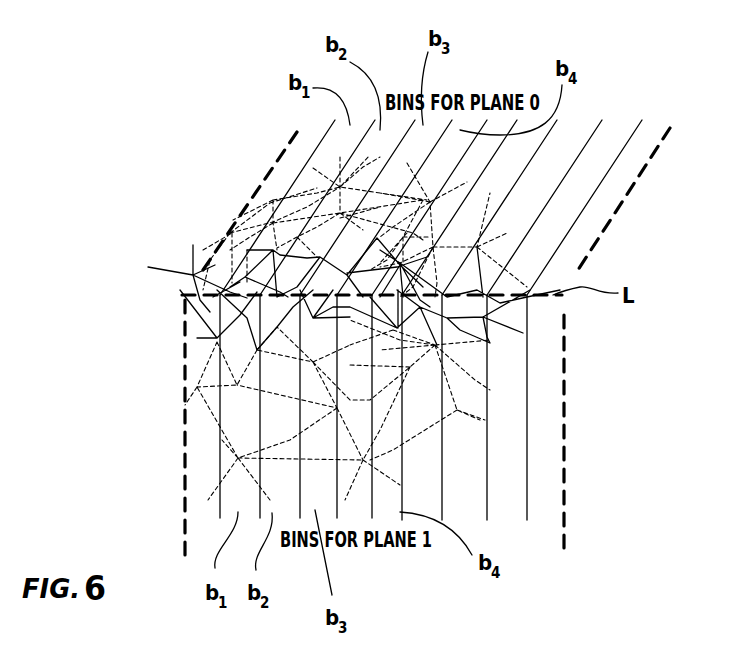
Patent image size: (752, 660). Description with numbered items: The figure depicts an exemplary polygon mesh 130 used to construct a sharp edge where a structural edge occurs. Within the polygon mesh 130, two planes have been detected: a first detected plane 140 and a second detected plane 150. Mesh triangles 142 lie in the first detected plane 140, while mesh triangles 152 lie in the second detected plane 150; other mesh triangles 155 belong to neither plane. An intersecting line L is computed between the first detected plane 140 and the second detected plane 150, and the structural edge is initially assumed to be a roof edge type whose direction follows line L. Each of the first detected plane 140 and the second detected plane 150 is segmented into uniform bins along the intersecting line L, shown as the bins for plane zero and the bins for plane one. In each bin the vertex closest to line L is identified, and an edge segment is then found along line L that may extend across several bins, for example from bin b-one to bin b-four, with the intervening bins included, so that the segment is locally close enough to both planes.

The polygon mesh 130 is at (211, 96).
The first detected plane 140 is at (633, 192).
The mesh triangles 142 is at (230, 252).
The second detected plane 150 is at (567, 455).
The mesh triangles 152 is at (210, 410).
The mesh triangles 155 is at (185, 297).